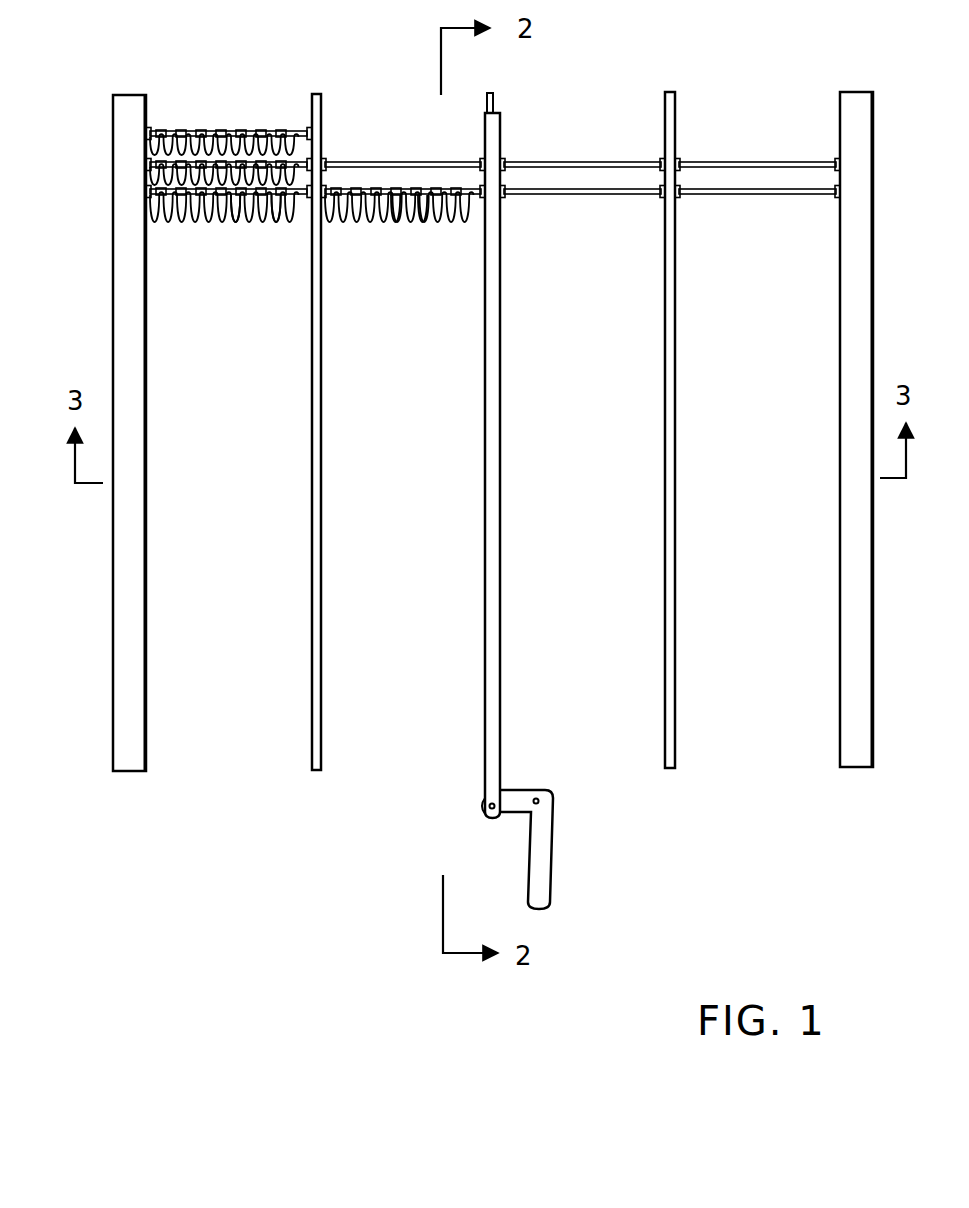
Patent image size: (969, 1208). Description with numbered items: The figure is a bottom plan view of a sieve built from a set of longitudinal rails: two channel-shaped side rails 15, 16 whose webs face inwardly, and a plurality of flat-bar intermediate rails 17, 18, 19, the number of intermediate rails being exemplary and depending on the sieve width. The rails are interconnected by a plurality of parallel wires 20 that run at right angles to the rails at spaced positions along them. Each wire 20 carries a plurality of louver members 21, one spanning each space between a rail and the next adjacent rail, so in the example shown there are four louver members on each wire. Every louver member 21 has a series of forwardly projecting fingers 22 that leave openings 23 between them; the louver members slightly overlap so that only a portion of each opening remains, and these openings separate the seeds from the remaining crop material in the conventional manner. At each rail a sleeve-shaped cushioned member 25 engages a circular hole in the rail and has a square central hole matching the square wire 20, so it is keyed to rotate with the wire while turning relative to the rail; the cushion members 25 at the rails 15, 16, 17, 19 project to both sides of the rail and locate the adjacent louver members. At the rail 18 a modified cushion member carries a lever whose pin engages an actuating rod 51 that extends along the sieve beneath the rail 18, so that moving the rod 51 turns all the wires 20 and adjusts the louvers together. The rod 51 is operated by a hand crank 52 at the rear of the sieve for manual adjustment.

The side rail 15 is at (133, 591).
The side rail 16 is at (847, 645).
The intermediate rail 17 is at (322, 645).
The intermediate rail 18 is at (495, 105).
The intermediate rail 19 is at (663, 640).
The wire 20 is at (395, 160).
The louver member 21 is at (224, 155).
The finger 22 is at (237, 223).
The opening 23 is at (277, 223).
The cushioned member 25 is at (150, 128).
The actuating rod 51 is at (484, 478).
The hand crank 52 is at (552, 848).